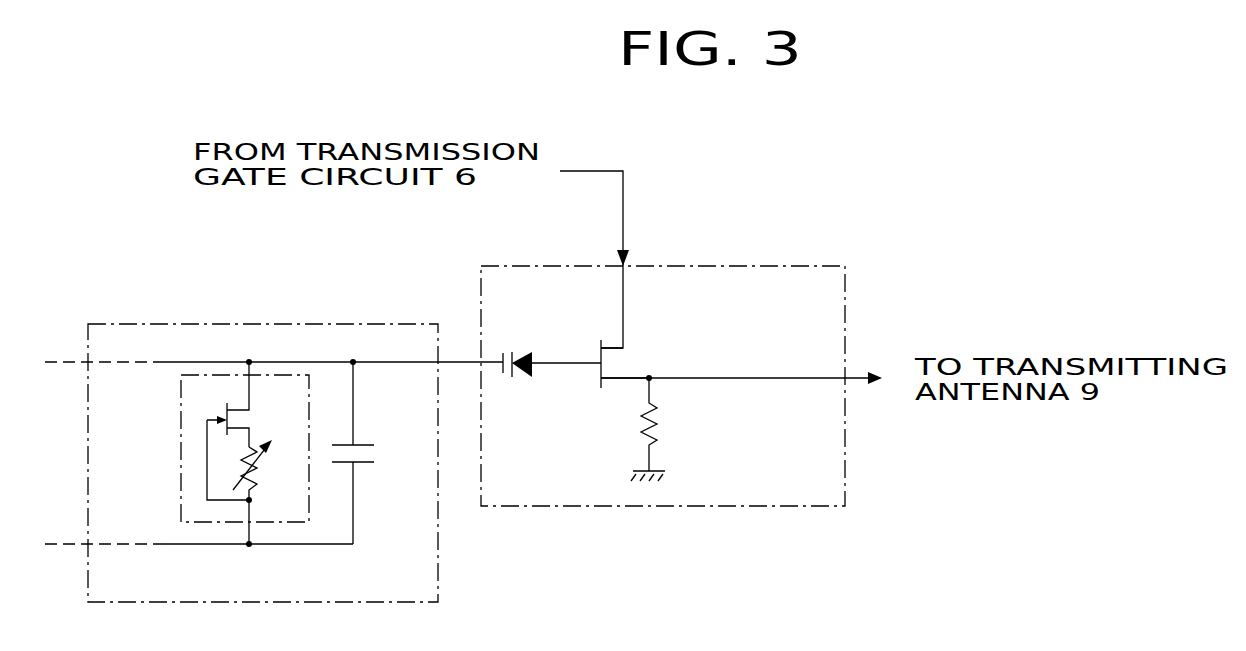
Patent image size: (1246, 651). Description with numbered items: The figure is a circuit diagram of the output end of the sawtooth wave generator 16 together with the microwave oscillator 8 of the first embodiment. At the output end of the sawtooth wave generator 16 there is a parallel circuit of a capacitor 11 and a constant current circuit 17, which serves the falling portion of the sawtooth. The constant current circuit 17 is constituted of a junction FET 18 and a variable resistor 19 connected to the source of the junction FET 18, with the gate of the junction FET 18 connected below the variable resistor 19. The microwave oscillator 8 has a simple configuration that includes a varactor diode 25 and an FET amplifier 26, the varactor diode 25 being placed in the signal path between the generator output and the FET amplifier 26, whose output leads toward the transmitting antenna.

The sawtooth wave generator 16 is at (240, 323).
The constant current circuit 17 is at (180, 438).
The junction FET 18 is at (217, 412).
The variable resistor 19 is at (260, 473).
The capacitor 11 is at (374, 453).
The microwave oscillator 8 is at (708, 265).
The varactor diode 25 is at (518, 383).
The FET amplifier 26 is at (628, 363).